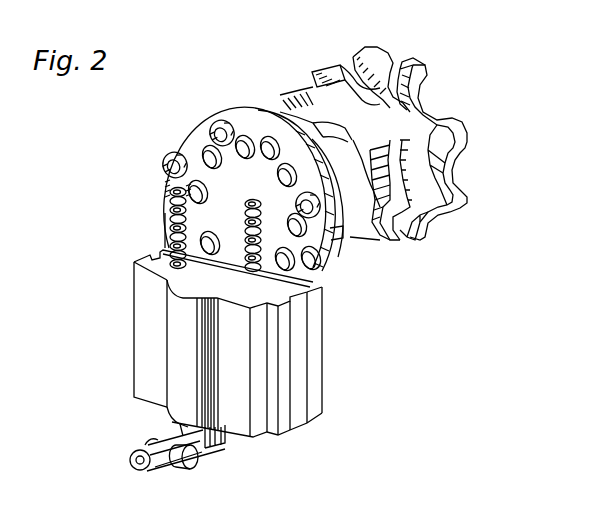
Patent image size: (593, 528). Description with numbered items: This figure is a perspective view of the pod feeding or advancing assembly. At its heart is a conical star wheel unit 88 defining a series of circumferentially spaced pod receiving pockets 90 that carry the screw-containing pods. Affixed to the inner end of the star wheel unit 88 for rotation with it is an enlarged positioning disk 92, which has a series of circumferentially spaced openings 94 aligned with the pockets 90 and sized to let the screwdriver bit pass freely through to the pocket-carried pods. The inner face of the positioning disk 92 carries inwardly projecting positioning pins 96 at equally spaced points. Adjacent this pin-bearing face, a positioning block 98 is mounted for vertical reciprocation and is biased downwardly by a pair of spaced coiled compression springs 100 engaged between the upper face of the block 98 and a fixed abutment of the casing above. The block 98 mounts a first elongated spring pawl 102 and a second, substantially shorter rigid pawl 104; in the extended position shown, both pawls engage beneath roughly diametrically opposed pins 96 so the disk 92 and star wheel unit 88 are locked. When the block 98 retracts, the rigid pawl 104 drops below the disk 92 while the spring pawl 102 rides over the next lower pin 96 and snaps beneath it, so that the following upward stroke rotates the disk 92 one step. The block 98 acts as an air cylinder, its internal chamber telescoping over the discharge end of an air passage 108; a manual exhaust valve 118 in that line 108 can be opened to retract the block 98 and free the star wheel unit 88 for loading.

The conical star wheel unit 88 is at (402, 126).
The pod receiving pockets 90 is at (462, 166).
The positioning disk 92 is at (247, 104).
The openings 94 is at (205, 152).
The positioning pins 96 is at (219, 127).
The positioning block 98 is at (134, 336).
The coiled compression springs 100 is at (170, 224).
The elongated spring pawl 102 is at (163, 203).
The short rigid pawl 104 is at (318, 280).
The air passage 108 is at (214, 448).
The manual exhaust valve 118 is at (192, 462).